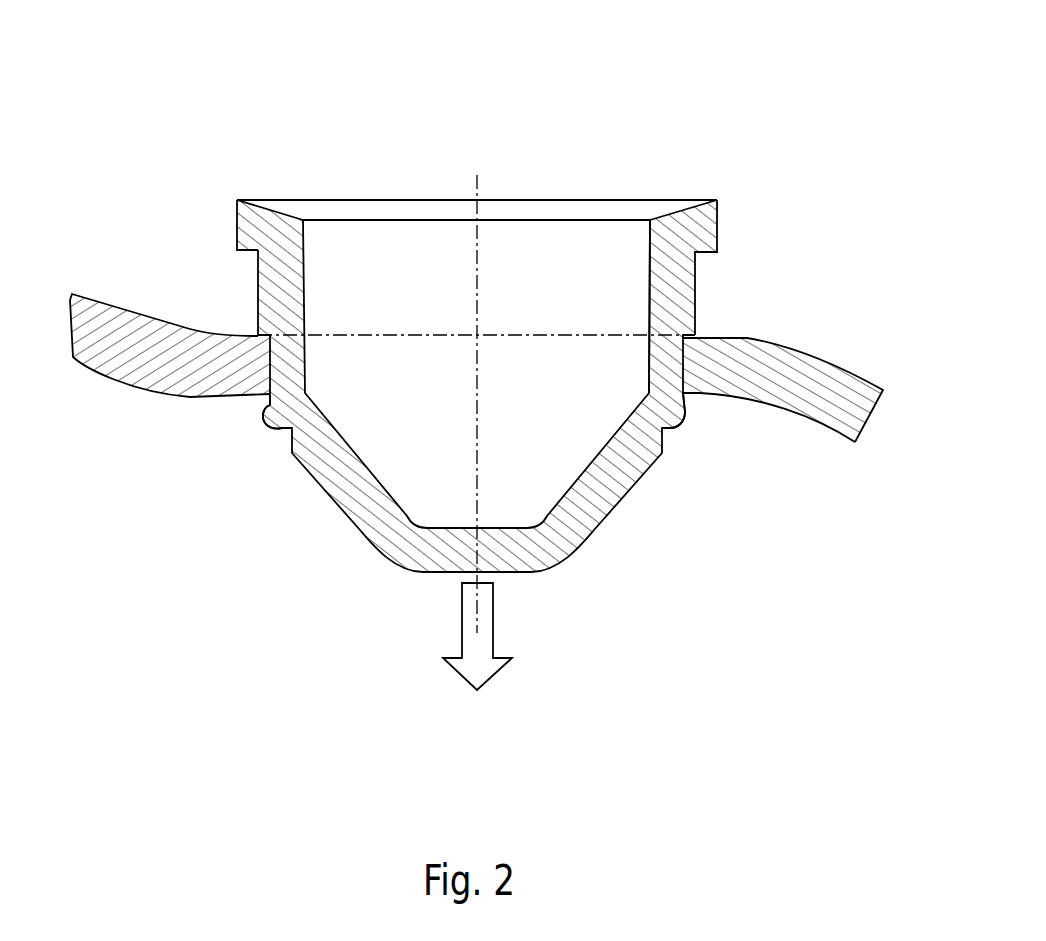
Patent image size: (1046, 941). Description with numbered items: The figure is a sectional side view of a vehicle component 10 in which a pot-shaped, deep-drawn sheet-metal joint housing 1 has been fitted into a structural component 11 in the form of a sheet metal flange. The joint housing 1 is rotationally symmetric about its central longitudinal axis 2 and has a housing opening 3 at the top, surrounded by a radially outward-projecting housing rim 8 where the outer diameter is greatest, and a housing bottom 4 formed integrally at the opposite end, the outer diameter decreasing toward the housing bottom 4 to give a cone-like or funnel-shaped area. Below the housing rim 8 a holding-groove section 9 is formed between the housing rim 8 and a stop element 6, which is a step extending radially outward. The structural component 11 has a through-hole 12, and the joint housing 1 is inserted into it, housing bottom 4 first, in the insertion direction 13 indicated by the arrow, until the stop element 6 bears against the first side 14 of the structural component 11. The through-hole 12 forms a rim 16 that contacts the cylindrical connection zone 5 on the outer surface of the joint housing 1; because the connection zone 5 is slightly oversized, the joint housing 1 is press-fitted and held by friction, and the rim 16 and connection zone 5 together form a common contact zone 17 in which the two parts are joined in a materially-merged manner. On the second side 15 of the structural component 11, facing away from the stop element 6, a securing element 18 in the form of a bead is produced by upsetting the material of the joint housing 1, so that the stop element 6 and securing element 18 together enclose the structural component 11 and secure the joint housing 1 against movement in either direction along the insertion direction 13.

The joint housing 1 is at (633, 497).
The central longitudinal axis 2 is at (479, 184).
The housing opening 3 is at (404, 184).
The housing bottom 4 is at (535, 592).
The connection zone 5 is at (692, 362).
The stop element 6 is at (254, 331).
The housing rim 8 is at (232, 211).
The holding-groove section 9 is at (706, 283).
The vehicle component 10 is at (698, 106).
The structural component 11 is at (815, 372).
The through-hole 12 is at (259, 405).
The insertion direction 13 is at (461, 618).
The first side 14 is at (82, 288).
The second side 15 is at (830, 440).
The rim 16 is at (670, 377).
The contact zone 17 is at (694, 402).
The securing element 18 is at (273, 435).